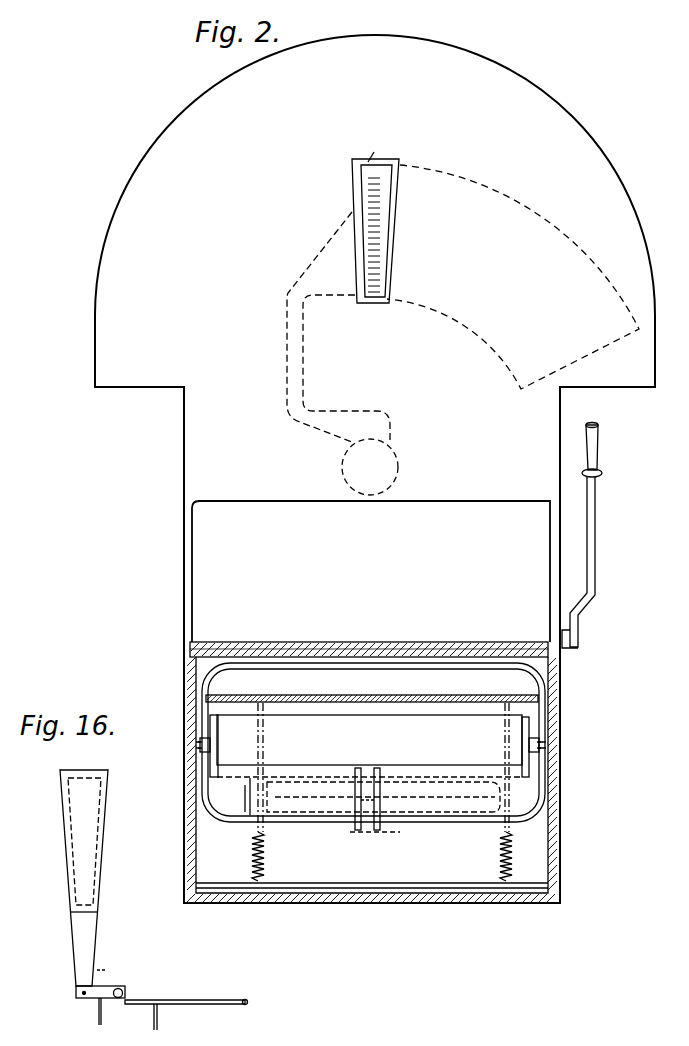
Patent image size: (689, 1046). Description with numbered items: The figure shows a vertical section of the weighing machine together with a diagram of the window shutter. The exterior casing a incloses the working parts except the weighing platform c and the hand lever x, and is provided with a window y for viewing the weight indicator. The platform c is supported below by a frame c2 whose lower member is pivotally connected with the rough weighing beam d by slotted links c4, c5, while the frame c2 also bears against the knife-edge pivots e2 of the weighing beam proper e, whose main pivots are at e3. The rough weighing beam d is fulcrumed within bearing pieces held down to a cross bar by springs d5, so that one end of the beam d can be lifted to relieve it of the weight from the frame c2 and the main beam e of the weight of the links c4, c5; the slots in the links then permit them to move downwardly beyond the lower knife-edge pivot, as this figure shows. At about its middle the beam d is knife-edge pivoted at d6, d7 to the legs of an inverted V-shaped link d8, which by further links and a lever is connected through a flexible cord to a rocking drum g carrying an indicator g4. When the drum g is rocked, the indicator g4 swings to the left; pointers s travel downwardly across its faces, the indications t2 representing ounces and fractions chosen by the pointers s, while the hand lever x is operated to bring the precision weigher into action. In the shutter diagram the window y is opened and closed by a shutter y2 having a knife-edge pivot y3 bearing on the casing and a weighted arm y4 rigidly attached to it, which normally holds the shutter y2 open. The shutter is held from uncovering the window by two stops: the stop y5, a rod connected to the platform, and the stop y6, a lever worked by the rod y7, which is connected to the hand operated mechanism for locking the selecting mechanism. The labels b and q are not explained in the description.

In FIG. 2, the exterior casing a is at (190, 440).
In FIG. 2, the weighing platform c is at (330, 642).
In FIG. 2, the frame c2 is at (210, 686).
In FIG. 2, the slotted link c4 is at (352, 826).
In FIG. 2, the slotted link c5 is at (390, 830).
In FIG. 2, the contact piece b is at (367, 832).
In FIG. 2, the rough weighing beam d is at (302, 796).
In FIG. 2, the spring d5 is at (272, 840).
In FIG. 2, the knife-edge pivot d6 is at (256, 792).
In FIG. 2, the knife-edge pivot d7 is at (512, 796).
In FIG. 2, the inverted V-shaped link d8 is at (302, 738).
In FIG. 2, the weighing beam proper e is at (248, 724).
In FIG. 2, the knife-edge pivot e2 is at (212, 750).
In FIG. 2, the main pivot e3 is at (200, 744).
In FIG. 2, the rocking drum g is at (396, 452).
In FIG. 2, the indicator g4 is at (432, 174).
In FIG. 2, the hatched bar q is at (350, 691).
In FIG. 2, the pointer s is at (368, 149).
In FIG. 2, the indications t2 is at (365, 216).
In FIG. 2, the hand lever x is at (597, 540).
In FIG. 2, the window y is at (386, 263).
In FIG. 16, the window y is at (96, 870).
In FIG. 16, the shutter y2 is at (106, 821).
In FIG. 16, the knife-edge pivot y3 is at (76, 992).
In FIG. 16, the weighted arm y4 is at (122, 988).
In FIG. 16, the stop y5 is at (97, 1018).
In FIG. 16, the stop y6 is at (146, 1002).
In FIG. 16, the rod y7 is at (160, 1022).